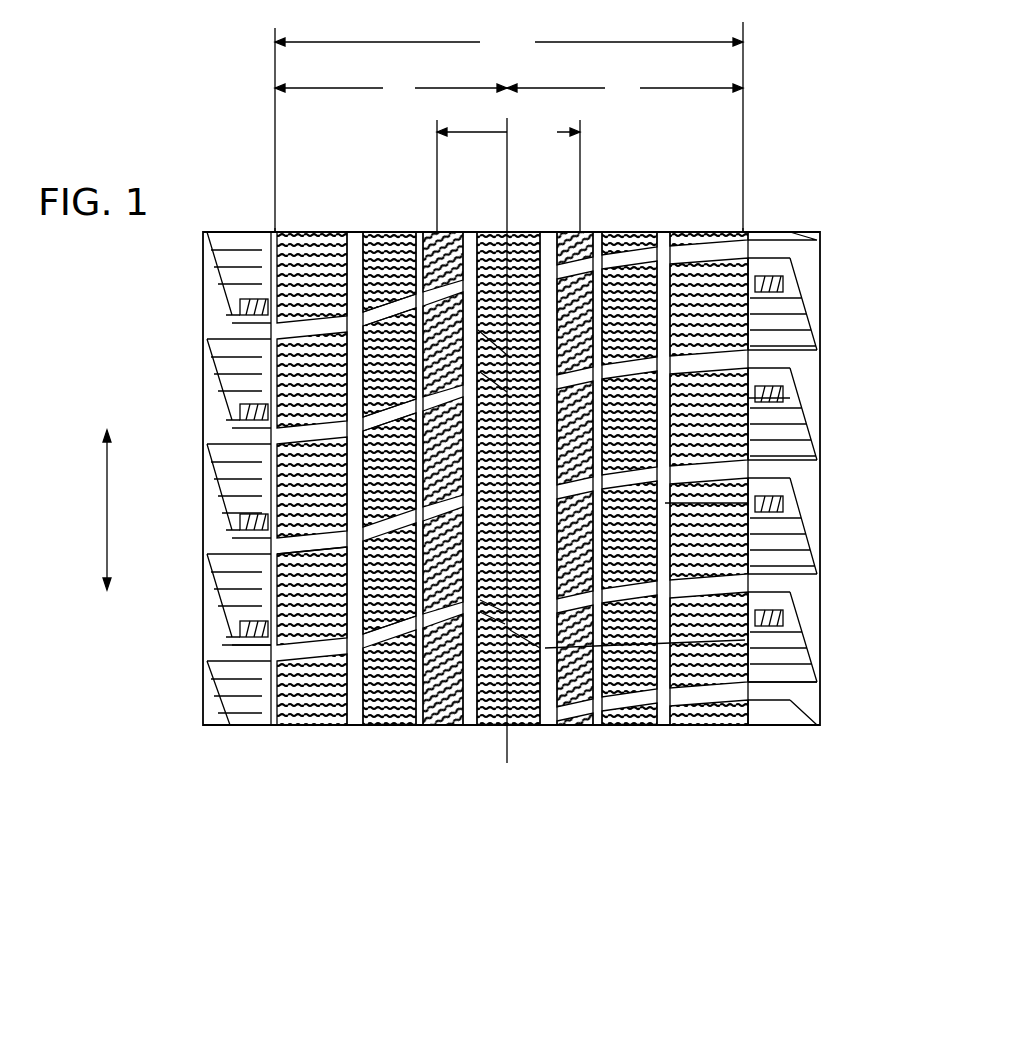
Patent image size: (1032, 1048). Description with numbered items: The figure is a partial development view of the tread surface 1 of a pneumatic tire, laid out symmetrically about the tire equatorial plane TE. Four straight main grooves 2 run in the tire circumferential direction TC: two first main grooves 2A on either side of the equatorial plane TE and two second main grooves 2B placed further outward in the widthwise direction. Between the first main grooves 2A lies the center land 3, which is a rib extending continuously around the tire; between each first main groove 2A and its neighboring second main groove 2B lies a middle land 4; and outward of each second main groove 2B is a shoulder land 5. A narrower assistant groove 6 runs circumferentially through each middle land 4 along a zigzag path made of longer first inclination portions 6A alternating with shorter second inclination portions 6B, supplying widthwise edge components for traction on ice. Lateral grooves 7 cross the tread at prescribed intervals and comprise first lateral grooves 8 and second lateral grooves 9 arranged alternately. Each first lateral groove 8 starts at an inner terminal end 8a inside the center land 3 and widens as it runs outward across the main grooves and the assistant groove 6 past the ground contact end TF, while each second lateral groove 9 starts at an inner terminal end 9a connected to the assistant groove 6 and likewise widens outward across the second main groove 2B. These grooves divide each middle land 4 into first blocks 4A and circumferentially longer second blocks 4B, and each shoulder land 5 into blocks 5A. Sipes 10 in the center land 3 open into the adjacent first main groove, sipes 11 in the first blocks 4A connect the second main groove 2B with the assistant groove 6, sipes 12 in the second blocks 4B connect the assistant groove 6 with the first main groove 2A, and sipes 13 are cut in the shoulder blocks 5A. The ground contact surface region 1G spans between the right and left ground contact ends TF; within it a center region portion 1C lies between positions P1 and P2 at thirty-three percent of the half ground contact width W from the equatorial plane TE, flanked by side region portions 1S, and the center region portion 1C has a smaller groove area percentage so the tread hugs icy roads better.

The tread surface 1 is at (618, 232).
The side region portion 1S is at (509, 418).
The center region portion 1C is at (508, 174).
The ground contact surface region 1G is at (509, 127).
The half ground contact width W is at (509, 89).
The equatorial plane TE is at (510, 440).
The ground contact end TF is at (743, 232).
The circumferential direction TC is at (86, 510).
The position P1 is at (428, 232).
The position P2 is at (583, 232).
The main groove 2 is at (533, 547).
The first main groove 2A is at (478, 728).
The second main groove 2B is at (357, 728).
The center land 3 is at (545, 499).
The middle land 4 is at (625, 567).
The first block 4A is at (402, 728).
The second block 4B is at (457, 728).
The shoulder land 5 is at (475, 497).
The block 5A is at (232, 652).
The assistant groove 6 is at (530, 547).
The first inclination portion 6A is at (360, 602).
The second inclination portion 6B is at (290, 583).
The lateral groove 7 is at (505, 478).
The first lateral groove 8 is at (520, 478).
The second lateral groove 9 is at (180, 478).
The inner terminal end 8a is at (398, 303).
The inner terminal end 9a is at (305, 232).
The sipe 10 is at (492, 232).
The sipe 11 is at (688, 232).
The sipe 12 is at (612, 728).
The sipe 13 is at (745, 398).